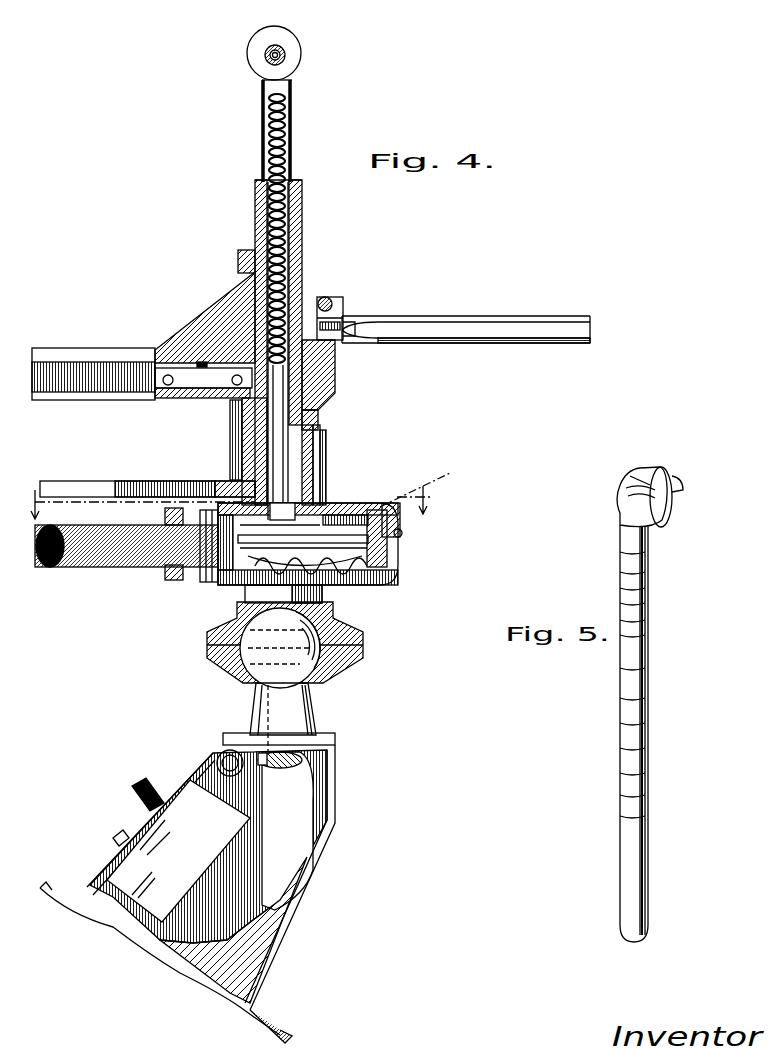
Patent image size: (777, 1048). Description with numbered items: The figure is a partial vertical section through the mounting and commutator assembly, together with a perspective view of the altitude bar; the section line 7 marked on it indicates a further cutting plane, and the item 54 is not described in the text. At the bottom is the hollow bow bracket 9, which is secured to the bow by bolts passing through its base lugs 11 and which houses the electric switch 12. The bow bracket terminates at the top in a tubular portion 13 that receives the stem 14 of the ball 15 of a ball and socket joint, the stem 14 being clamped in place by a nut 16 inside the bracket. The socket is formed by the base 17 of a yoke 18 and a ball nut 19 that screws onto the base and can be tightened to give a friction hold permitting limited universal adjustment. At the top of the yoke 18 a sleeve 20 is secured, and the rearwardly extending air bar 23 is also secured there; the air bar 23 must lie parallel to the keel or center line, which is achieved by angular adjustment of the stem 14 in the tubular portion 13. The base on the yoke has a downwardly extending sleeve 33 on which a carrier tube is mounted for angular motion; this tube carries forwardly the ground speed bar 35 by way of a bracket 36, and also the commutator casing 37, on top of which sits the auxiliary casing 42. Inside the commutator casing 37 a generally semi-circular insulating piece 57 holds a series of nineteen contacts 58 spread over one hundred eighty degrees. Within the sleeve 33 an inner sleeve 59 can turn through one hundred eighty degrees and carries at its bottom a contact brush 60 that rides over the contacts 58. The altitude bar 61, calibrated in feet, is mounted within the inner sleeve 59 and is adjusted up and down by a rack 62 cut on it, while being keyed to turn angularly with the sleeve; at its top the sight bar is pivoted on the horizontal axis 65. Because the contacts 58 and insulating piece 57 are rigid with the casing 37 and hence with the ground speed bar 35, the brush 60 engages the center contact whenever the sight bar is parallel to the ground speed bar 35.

In FIG. 4, the horizontal axis 65 is at (289, 55).
In FIG. 5, the horizontal axis 65 is at (683, 488).
In FIG. 4, the altitude bar 61 is at (287, 147).
In FIG. 5, the altitude bar 61 is at (643, 833).
In FIG. 4, the rack 62 is at (287, 162).
In FIG. 4, the sleeve 20 is at (303, 280).
In FIG. 4, the air bar 23 is at (145, 395).
In FIG. 4, the contacts 58 is at (173, 463).
In FIG. 4, the section line 7 is at (231, 501).
In FIG. 4, the commutator casing 37 is at (398, 557).
In FIG. 4, the contact brush 60 is at (393, 498).
In FIG. 4, the auxiliary casing 42 is at (428, 484).
In FIG. 4, the insulating piece 57 is at (404, 533).
In FIG. 4, the bracket 36 is at (337, 383).
In FIG. 4, the ground speed bar 35 is at (447, 333).
In FIG. 4, the inner sleeve 59 is at (293, 422).
In FIG. 4, the downwardly extending sleeve 33 is at (321, 435).
In FIG. 4, the yoke 18 is at (318, 460).
In FIG. 4, the strip 54 is at (312, 482).
In FIG. 4, the base of yoke 17 is at (232, 616).
In FIG. 4, the ball nut 19 is at (230, 667).
In FIG. 4, the ball 15 is at (300, 640).
In FIG. 4, the tubular portion 13 is at (320, 717).
In FIG. 4, the stem 14 is at (262, 712).
In FIG. 4, the bow bracket 9 is at (333, 827).
In FIG. 4, the base lugs 11 is at (273, 1025).
In FIG. 4, the electric switch 12 is at (190, 793).
In FIG. 4, the nut 16 is at (300, 762).